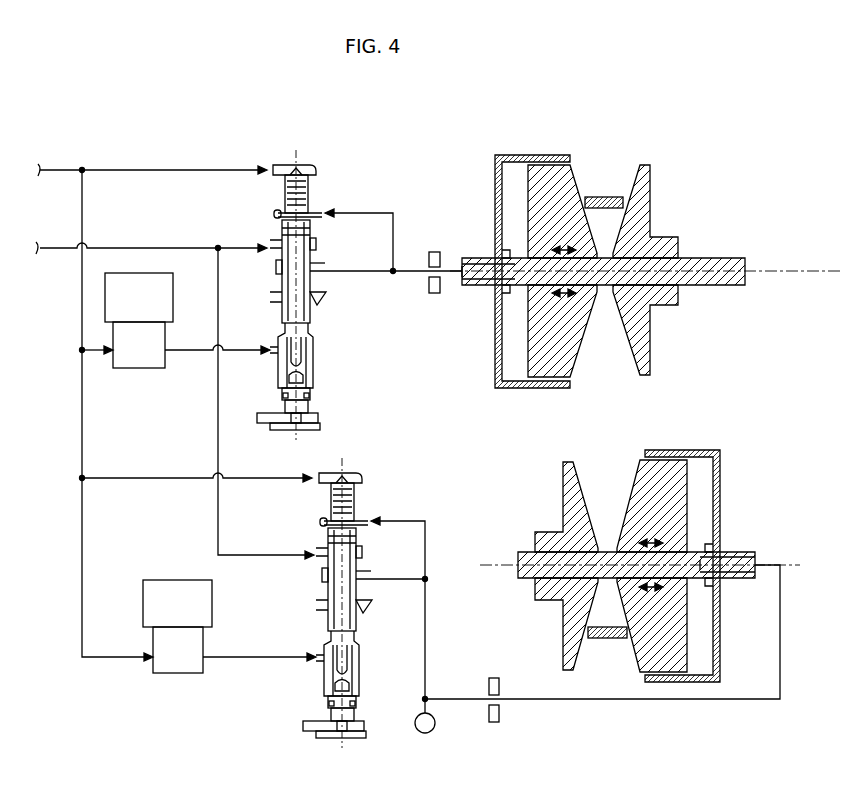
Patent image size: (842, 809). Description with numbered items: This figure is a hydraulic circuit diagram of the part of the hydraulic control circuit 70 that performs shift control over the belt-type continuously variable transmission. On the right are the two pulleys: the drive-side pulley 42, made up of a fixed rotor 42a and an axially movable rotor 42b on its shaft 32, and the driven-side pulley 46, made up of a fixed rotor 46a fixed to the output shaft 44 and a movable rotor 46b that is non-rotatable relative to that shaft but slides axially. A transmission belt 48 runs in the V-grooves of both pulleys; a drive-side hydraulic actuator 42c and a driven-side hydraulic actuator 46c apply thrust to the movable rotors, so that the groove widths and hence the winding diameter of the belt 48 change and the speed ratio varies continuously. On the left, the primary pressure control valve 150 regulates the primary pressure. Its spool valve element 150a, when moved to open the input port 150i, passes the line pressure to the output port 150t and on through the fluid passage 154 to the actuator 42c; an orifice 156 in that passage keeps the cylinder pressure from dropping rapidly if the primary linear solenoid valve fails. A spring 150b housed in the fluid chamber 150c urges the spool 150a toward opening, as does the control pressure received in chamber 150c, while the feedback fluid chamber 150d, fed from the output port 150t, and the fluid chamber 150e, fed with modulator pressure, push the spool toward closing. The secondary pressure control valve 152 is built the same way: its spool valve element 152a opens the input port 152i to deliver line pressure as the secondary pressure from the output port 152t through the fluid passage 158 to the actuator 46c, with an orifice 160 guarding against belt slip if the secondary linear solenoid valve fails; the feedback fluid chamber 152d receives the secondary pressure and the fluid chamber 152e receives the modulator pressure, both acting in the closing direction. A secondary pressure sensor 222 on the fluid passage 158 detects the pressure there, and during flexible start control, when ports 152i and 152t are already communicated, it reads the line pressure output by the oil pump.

The hydraulic control circuit 70 is at (305, 98).
The primary pressure control valve 150 is at (314, 148).
The spool valve element 150a is at (305, 312).
The spring 150b is at (308, 382).
The fluid chamber 150c is at (306, 368).
The feedback fluid chamber 150d is at (278, 216).
The fluid chamber 150e is at (315, 170).
The input port 150i is at (280, 240).
The output port 150t is at (318, 268).
The secondary pressure control valve 152 is at (358, 456).
The spool valve element 152a is at (351, 616).
The feedback fluid chamber 152d is at (324, 524).
The fluid chamber 152e is at (360, 479).
The input port 152i is at (326, 548).
The output port 152t is at (364, 578).
The fluid passage 154 is at (400, 275).
The orifice 156 is at (434, 295).
The fluid passage 158 is at (465, 703).
The orifice 160 is at (494, 723).
The secondary pressure sensor 222 is at (422, 736).
The drive-side pulley 42 is at (640, 132).
The fixed rotor 42a is at (652, 190).
The movable rotor 42b is at (590, 352).
The drive-side hydraulic actuator 42c is at (494, 190).
The primary shaft 32 is at (692, 258).
The driven-side pulley 46 is at (594, 440).
The fixed rotor 46a is at (565, 485).
The movable rotor 46b is at (645, 465).
The driven-side hydraulic actuator 46c is at (722, 540).
The output shaft 44 is at (527, 552).
The transmission belt 48 is at (614, 197).